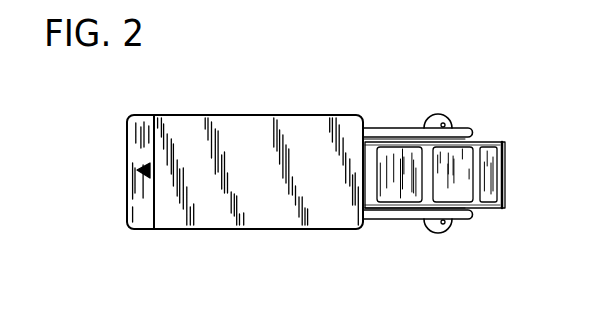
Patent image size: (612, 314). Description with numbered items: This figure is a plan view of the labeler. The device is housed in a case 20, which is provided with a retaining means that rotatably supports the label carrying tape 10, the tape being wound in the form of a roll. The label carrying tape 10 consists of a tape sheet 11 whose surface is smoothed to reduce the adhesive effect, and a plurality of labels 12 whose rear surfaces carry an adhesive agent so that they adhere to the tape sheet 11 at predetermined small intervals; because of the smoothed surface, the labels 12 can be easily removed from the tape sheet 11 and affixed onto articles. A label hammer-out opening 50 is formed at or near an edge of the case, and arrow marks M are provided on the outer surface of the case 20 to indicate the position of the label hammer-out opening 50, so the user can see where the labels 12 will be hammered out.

The label hammer-out opening 50 is at (126, 185).
The arrow marks M is at (137, 170).
The label carrying tape 10 is at (491, 141).
The labels 12 is at (398, 202).
The tape sheet 11 is at (474, 205).
The case 20 is at (383, 124).